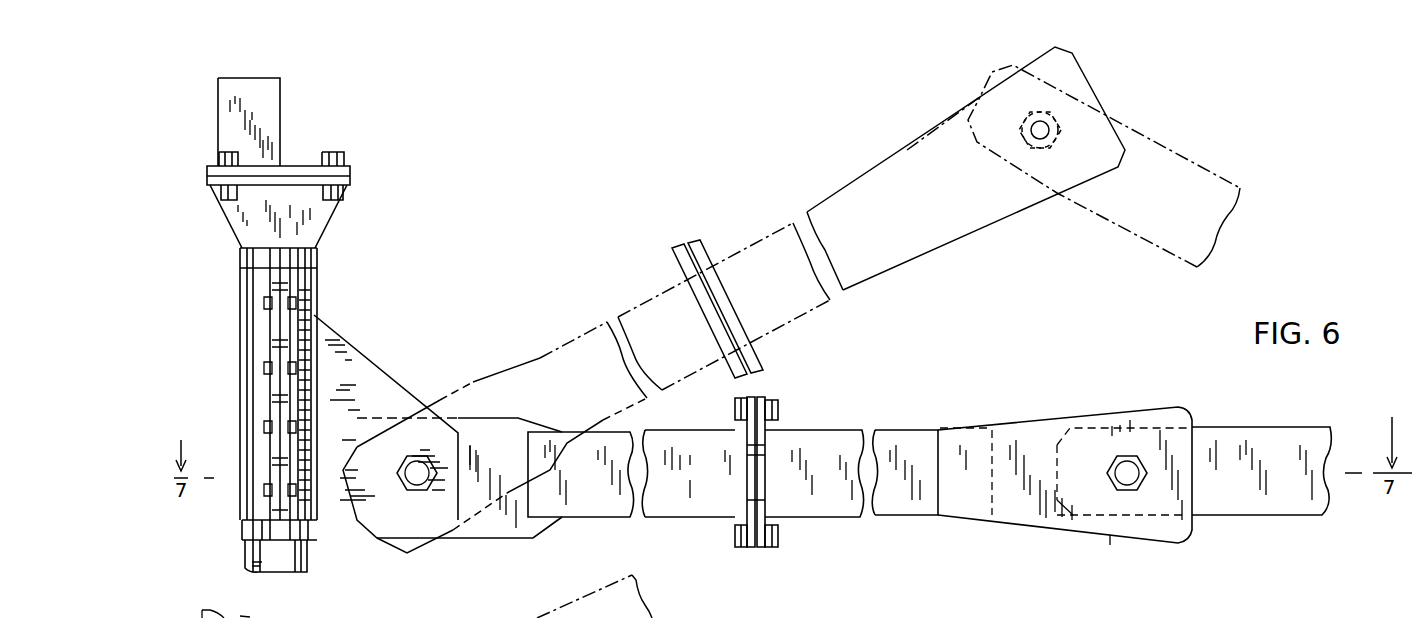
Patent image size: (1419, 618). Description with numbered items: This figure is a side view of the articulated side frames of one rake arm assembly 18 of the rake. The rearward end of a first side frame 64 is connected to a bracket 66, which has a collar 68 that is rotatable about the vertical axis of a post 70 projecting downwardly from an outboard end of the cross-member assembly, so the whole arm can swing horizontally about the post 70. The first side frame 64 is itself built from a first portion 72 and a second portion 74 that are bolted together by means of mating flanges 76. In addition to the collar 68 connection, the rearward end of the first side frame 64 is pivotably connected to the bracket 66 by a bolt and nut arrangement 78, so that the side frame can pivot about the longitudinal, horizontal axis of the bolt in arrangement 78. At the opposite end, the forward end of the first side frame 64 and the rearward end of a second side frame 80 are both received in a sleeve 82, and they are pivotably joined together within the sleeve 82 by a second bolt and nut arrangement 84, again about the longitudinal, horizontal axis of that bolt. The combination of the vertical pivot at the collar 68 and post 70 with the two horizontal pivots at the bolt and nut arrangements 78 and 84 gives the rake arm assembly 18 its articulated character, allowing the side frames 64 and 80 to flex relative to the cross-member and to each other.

The rake arm assembly 18 is at (1073, 403).
The first side frame 64 is at (588, 350).
The bracket 66 is at (366, 388).
The collar 68 is at (312, 296).
The post 70 is at (304, 562).
The first portion 72 is at (712, 490).
The second portion 74 is at (908, 505).
The mating flanges 76 is at (753, 397).
The bolt and nut arrangement 78 is at (437, 470).
The second side frame 80 is at (1281, 443).
The sleeve 82 is at (1128, 530).
The bolt and nut arrangement 84 is at (1129, 461).